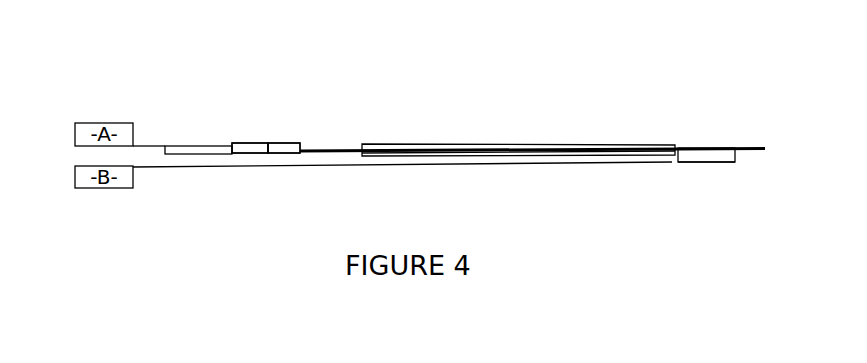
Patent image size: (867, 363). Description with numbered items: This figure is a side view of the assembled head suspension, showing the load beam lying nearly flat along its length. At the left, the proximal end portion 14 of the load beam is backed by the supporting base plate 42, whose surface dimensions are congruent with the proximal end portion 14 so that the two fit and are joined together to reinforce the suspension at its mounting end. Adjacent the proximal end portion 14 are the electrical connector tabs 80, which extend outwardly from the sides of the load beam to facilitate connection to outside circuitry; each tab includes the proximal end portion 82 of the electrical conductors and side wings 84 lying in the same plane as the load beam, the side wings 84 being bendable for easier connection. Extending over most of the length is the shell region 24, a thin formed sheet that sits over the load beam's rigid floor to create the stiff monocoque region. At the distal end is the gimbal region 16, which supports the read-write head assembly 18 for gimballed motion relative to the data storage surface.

The proximal end portion 14 is at (265, 130).
The gimbal region 16 is at (703, 148).
The read-write head assembly 18 is at (708, 155).
The shell region 24 is at (360, 147).
The supporting base plate 42 is at (190, 148).
The electrical connector tabs 80 is at (264, 182).
The proximal end portion of the electrical conductors 82 is at (257, 148).
The side wings 84 is at (292, 150).